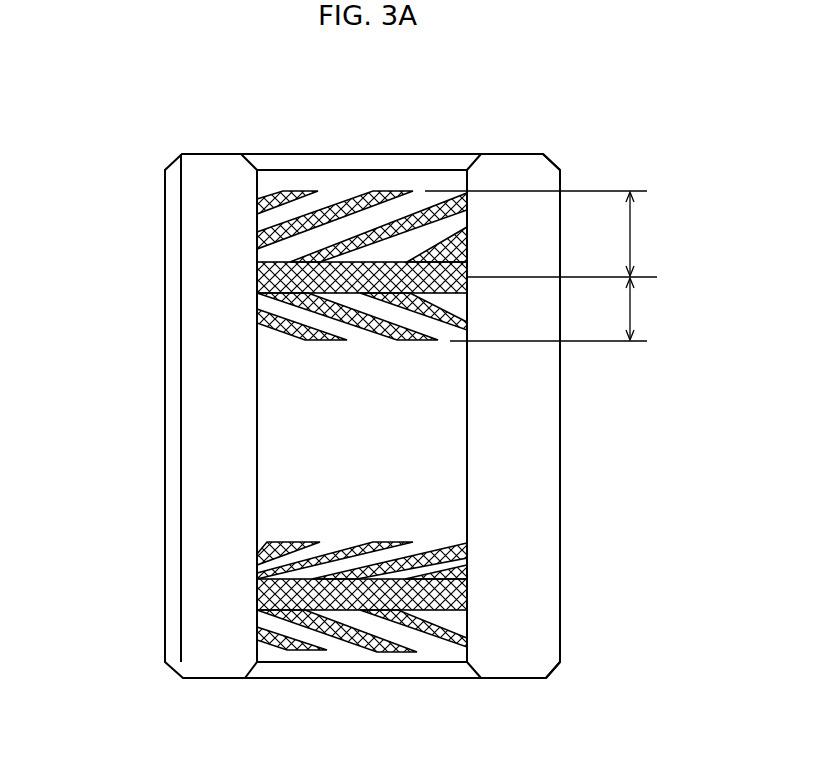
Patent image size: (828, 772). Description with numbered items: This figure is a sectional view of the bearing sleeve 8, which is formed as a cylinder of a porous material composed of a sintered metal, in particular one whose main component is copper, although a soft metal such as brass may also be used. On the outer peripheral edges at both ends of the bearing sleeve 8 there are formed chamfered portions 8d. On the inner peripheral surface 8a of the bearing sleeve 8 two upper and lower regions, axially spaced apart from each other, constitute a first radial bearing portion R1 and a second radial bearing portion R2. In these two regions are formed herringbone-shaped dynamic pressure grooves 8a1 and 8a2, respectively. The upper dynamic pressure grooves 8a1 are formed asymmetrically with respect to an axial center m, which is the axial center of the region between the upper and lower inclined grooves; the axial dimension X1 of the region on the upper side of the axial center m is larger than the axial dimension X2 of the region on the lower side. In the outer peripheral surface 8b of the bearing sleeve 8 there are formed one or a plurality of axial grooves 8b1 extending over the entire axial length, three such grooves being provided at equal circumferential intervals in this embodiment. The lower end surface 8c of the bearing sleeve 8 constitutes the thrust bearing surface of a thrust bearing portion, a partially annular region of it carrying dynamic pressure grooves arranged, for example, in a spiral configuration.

The bearing sleeve 8 is at (133, 156).
The inner peripheral surface 8a is at (470, 418).
The upper dynamic pressure grooves 8a1 is at (312, 202).
The lower dynamic pressure grooves 8a2 is at (318, 552).
The outer peripheral surface 8b is at (165, 384).
The axial grooves 8b1 is at (180, 442).
The lower end surface 8c is at (512, 678).
The chamfered portions 8d is at (556, 158).
The first radial bearing portion R1 is at (177, 288).
The second radial bearing portion R2 is at (179, 600).
The axial dimension of the region on the upper side of the axial center X1 is at (548, 233).
The axial dimension of the region on the lower side of the axial center X2 is at (560, 309).
The axial center m is at (574, 275).